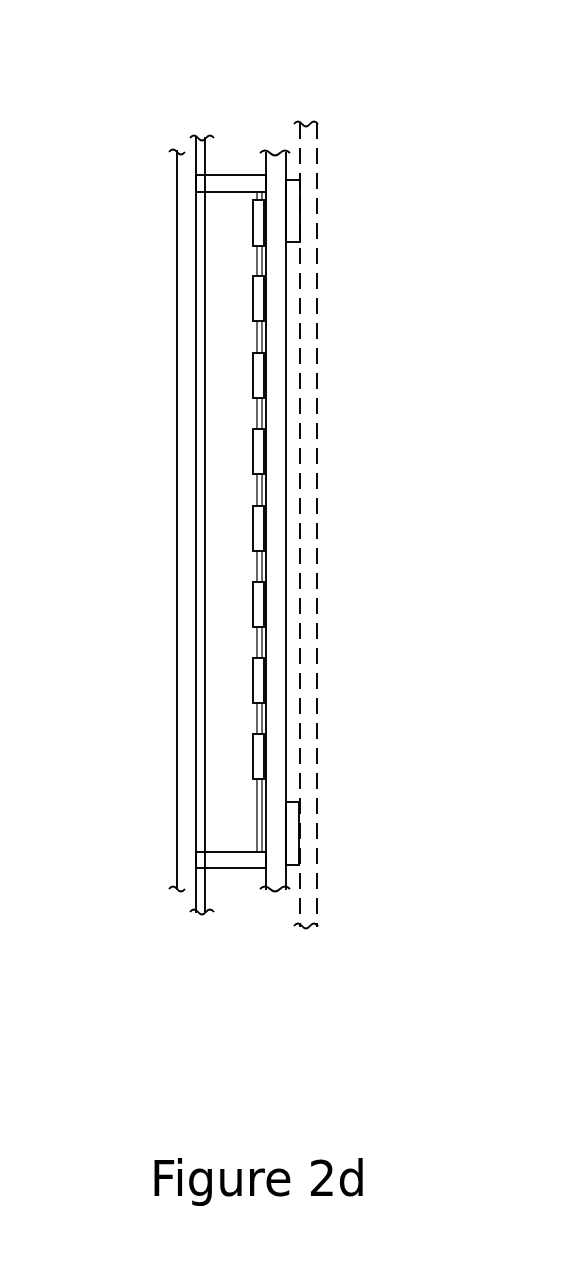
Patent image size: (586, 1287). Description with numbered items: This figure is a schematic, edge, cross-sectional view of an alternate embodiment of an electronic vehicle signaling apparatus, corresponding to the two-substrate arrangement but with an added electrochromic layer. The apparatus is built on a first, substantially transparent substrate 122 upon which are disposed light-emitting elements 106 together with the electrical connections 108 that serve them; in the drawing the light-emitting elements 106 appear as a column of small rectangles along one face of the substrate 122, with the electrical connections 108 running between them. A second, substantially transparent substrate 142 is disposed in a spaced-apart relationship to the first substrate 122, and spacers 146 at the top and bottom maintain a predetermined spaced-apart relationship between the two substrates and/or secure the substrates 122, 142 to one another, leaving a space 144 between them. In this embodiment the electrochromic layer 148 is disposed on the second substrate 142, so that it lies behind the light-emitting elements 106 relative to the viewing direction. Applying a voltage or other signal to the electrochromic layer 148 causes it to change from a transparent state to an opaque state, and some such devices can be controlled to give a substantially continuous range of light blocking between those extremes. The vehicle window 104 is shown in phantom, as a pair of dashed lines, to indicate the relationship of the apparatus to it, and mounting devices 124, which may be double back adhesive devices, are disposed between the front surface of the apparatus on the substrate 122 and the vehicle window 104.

The vehicle window 104 is at (310, 443).
The light-emitting elements 106 is at (257, 214).
The electrical connections 108 is at (260, 270).
The substrate 122 is at (275, 617).
The mounting devices 124 is at (295, 213).
The second substrate 142 is at (185, 597).
The space 144 is at (225, 355).
The spacers 146 is at (223, 183).
The electrochromic layer 148 is at (198, 513).